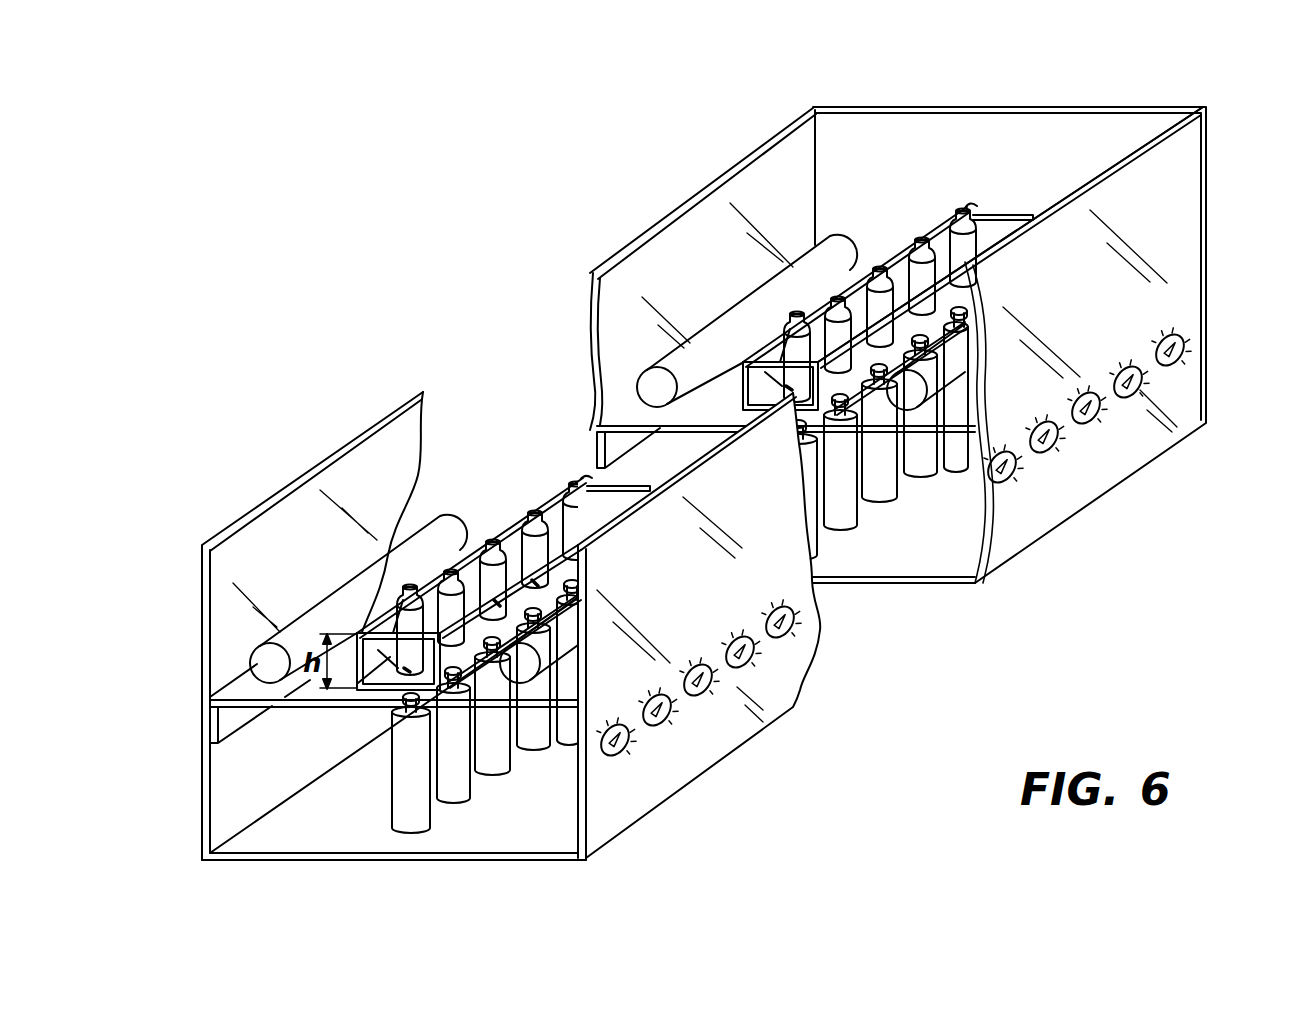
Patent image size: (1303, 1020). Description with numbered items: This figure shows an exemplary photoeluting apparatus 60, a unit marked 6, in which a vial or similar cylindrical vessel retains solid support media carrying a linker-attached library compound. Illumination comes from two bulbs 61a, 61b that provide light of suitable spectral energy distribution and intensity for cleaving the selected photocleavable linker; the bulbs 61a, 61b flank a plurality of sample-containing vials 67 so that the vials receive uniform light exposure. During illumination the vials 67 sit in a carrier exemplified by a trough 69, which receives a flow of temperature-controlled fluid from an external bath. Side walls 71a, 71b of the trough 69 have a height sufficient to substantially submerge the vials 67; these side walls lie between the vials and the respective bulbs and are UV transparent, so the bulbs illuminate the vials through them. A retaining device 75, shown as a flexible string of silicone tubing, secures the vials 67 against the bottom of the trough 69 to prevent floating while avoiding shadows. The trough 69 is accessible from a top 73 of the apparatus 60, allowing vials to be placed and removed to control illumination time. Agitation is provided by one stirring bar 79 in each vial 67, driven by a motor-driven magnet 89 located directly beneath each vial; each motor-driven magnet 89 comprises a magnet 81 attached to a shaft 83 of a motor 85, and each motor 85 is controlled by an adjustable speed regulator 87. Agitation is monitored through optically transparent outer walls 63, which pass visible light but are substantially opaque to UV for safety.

The storage unit 6 is at (265, 787).
The apparatus 60 is at (690, 127).
The bulb 61a is at (323, 612).
The bulb 61b is at (534, 672).
The outer walls 63 is at (685, 261).
The sample-containing vials 67 is at (452, 580).
The trough 69 is at (373, 658).
The side wall 71a is at (387, 627).
The side wall 71b is at (555, 560).
The top 73 is at (880, 107).
The retaining device 75 is at (977, 205).
The stirring bar 79 is at (533, 582).
The magnet 81 is at (450, 670).
The shaft 83 is at (490, 648).
The motor 85 is at (408, 817).
The adjustable speed regulator 87 is at (750, 647).
The motor-driven magnet 89 is at (878, 515).